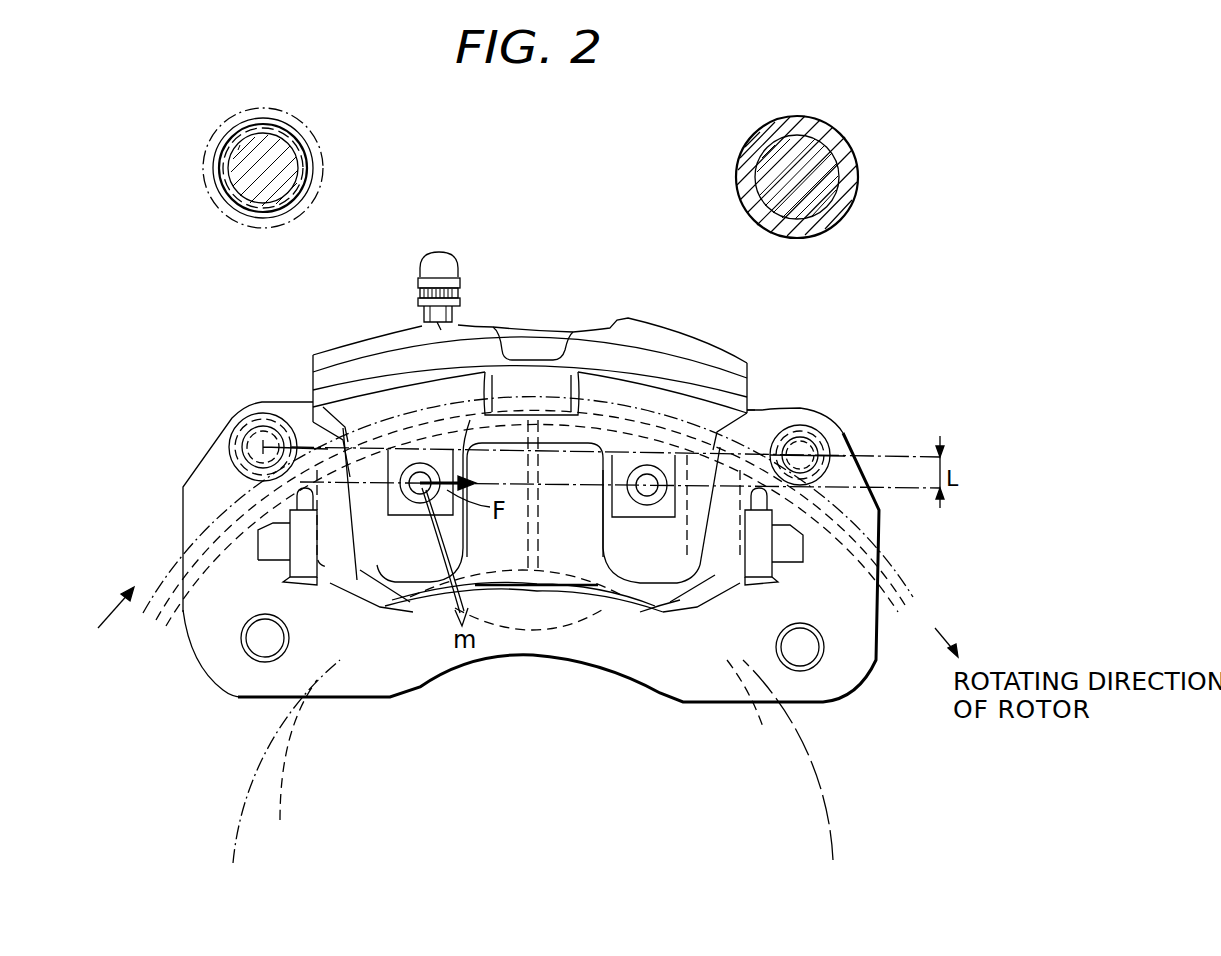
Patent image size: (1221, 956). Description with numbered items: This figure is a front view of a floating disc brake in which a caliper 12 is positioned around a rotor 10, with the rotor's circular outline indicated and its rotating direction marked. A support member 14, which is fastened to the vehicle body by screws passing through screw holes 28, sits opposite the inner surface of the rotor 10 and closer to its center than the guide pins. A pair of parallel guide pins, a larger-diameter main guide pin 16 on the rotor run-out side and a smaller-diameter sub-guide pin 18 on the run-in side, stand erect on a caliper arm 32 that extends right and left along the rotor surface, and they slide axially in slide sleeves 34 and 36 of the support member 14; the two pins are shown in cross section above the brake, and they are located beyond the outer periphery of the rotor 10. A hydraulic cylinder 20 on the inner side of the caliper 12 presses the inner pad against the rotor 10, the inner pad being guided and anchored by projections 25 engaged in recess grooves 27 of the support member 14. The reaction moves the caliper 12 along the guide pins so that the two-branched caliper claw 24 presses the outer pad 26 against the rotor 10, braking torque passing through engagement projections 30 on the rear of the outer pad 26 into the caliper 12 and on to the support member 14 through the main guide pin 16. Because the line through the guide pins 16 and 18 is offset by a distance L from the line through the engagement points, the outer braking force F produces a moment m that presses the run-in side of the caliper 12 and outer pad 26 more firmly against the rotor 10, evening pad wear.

The rotor 10 is at (900, 590).
The caliper 12 is at (717, 350).
The support member 14 is at (855, 660).
The main guide pin 16 is at (830, 230).
The sub-guide pin 18 is at (280, 210).
The hydraulic cylinder 20 is at (527, 347).
The caliper claw 24 is at (395, 615).
The projections 25 is at (285, 582).
The outer pad 26 is at (660, 600).
The recess grooves 27 is at (303, 580).
The screw holes 28 is at (253, 648).
The engagement projections 30 is at (422, 495).
The caliper arm 32 is at (757, 407).
The slide sleeve 34 is at (843, 150).
The slide sleeve 36 is at (307, 153).